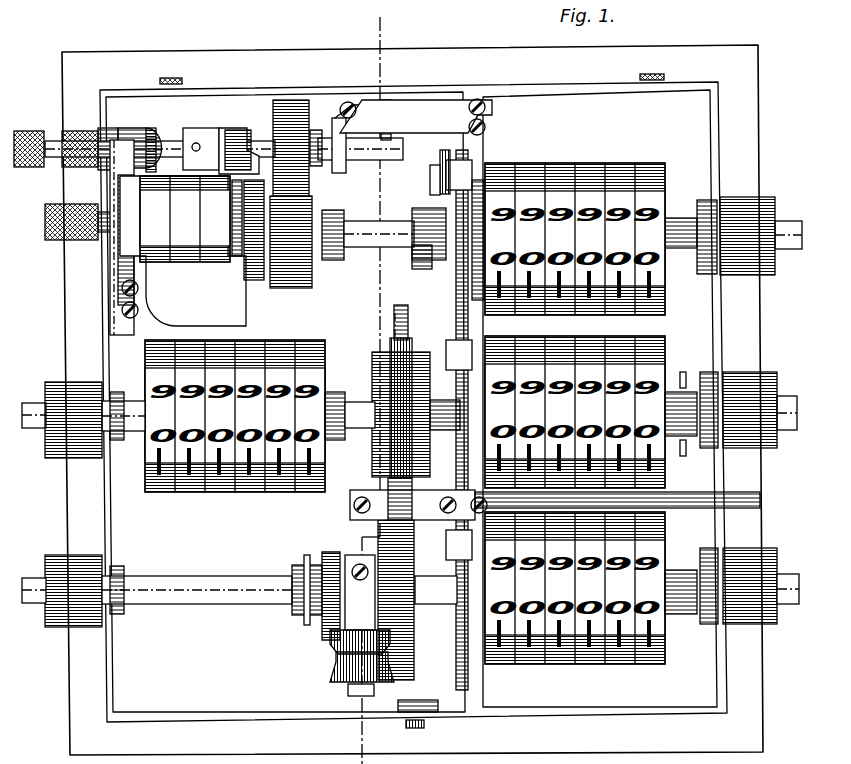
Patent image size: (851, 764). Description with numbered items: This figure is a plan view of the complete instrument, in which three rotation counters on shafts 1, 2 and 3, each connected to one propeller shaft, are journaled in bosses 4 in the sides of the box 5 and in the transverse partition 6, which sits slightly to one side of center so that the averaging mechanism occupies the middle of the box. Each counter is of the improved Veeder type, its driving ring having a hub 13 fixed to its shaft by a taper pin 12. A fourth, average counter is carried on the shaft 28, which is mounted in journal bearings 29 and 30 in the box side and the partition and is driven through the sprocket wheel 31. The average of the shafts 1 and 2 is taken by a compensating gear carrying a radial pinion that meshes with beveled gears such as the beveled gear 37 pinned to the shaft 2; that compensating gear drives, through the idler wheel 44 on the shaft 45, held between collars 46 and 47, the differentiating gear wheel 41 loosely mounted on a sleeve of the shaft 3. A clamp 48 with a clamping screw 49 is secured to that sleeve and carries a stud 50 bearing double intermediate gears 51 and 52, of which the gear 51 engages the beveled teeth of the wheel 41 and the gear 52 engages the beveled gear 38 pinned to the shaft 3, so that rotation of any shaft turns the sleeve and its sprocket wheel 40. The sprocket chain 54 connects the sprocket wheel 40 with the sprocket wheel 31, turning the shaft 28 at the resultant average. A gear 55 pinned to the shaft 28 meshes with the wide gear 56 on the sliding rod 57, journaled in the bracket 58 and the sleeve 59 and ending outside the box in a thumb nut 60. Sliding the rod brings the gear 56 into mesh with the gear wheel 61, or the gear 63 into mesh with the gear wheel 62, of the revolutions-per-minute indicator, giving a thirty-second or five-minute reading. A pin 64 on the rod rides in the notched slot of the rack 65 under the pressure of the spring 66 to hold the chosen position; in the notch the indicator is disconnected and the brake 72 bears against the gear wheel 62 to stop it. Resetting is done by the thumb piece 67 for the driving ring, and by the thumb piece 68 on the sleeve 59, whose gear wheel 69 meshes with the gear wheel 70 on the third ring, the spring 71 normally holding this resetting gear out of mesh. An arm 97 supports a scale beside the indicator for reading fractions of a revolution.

The rotation counter shaft 1 is at (28, 405).
The rotation counter shaft 2 is at (792, 398).
The rotation counter shaft 3 is at (798, 596).
The bosses 4 is at (54, 382).
The box 5 is at (108, 700).
The transverse partition 6 is at (472, 146).
The taper pin 12 is at (684, 378).
The hub 13 is at (662, 344).
The average counter shaft 28 is at (358, 230).
The journal bearing 29 is at (740, 200).
The journal bearing 30 is at (452, 165).
The sprocket wheel 31 is at (430, 177).
The beveled gear 37 is at (430, 350).
The beveled gear 38 is at (302, 622).
The sprocket wheel 40 is at (458, 680).
The differentiating gear wheel 41 is at (392, 682).
The idler wheel 44 is at (388, 492).
The shaft 45 is at (760, 498).
The collar 46 is at (350, 507).
The collar 47 is at (660, 456).
The clamp 48 is at (322, 562).
The clamping screw 49 is at (356, 558).
The stud 50 is at (352, 690).
The intermediate gear 51 is at (340, 668).
The intermediate gear 52 is at (338, 642).
The sprocket chain 54 is at (396, 340).
The gear 55 is at (314, 206).
The gear 56 is at (290, 100).
The sliding rod 57 is at (252, 140).
The bracket 58 is at (340, 118).
The sleeve 59 is at (100, 130).
The thumb nut 60 is at (24, 131).
The gear wheel 61 is at (300, 284).
The gear wheel 62 is at (252, 282).
The gear 63 is at (232, 128).
The pin 64 is at (386, 108).
The rack 65 is at (418, 102).
The spring 66 is at (487, 110).
The thumb piece 67 is at (45, 218).
The thumb piece 68 is at (62, 138).
The gear wheel 69 is at (150, 126).
The gear wheel 70 is at (112, 250).
The spring 71 is at (130, 126).
The brake 72 is at (194, 128).
The arm 97 is at (174, 306).